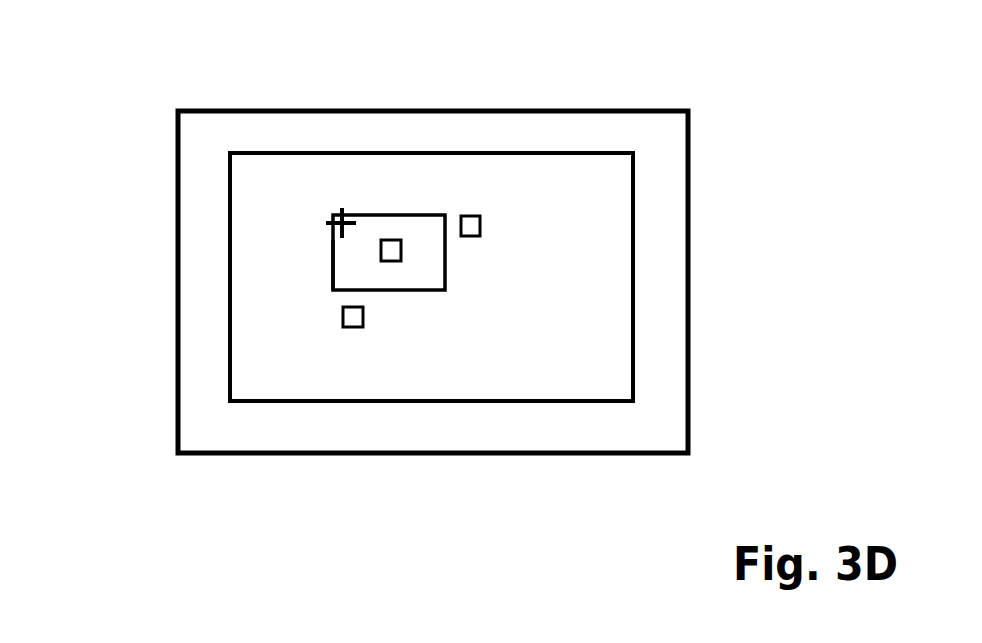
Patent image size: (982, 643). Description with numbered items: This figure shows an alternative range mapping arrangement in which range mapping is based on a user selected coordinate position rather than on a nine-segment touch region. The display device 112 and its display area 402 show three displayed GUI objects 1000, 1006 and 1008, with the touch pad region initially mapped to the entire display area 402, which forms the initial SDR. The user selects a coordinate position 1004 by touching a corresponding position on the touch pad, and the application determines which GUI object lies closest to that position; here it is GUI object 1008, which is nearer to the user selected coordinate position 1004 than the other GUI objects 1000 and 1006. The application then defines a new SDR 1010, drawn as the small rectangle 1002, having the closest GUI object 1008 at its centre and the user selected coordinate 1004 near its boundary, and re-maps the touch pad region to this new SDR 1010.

The display device 112 is at (627, 111).
The display area 402 is at (670, 247).
The GUI object 1000 is at (480, 225).
The selection region 1002 is at (395, 215).
The user selected coordinate position 1004 is at (337, 220).
The GUI object 1006 is at (362, 322).
The GUI object 1008 is at (387, 252).
The new SDR 1010 is at (333, 264).